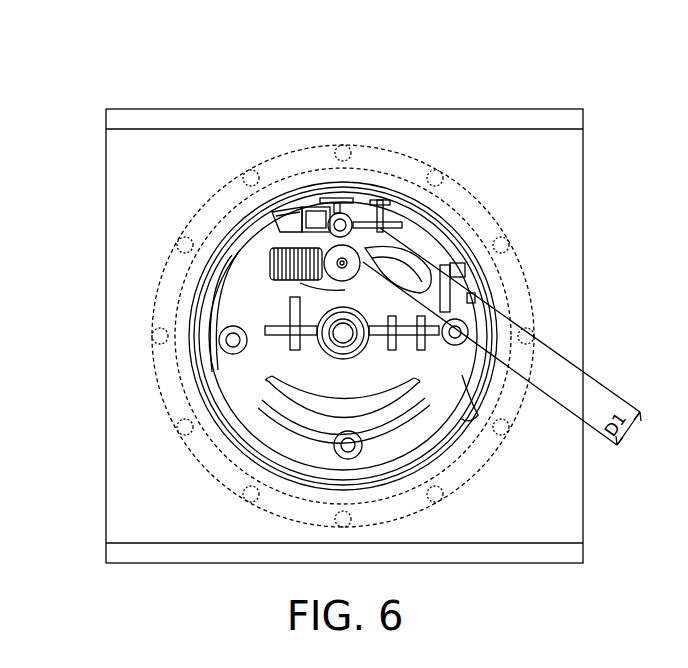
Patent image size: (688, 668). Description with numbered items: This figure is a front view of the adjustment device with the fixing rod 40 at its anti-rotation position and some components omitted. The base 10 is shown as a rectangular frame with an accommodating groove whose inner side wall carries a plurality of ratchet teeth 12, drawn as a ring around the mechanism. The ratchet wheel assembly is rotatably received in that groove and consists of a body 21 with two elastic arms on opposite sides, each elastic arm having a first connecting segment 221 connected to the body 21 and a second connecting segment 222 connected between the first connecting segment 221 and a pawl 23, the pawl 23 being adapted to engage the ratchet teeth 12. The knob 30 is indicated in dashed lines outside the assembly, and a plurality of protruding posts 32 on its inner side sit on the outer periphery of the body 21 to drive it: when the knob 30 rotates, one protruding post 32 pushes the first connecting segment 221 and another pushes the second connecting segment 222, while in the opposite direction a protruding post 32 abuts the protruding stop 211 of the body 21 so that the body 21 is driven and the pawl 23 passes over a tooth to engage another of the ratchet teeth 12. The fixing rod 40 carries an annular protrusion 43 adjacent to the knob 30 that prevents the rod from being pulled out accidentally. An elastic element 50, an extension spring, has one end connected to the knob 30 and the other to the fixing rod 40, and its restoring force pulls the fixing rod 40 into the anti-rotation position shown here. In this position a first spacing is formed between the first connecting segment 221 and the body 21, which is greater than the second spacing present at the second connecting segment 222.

The base 10 is at (527, 110).
The ratchet teeth 12 is at (282, 212).
The body 21 is at (327, 371).
The protruding stop 211 is at (462, 375).
The first connecting segment 221 is at (418, 212).
The second connecting segment 222 is at (313, 210).
The pawl 23 is at (288, 218).
The knob 30 is at (524, 275).
The protruding posts 32 is at (349, 213).
The fixing rod 40 is at (340, 247).
The annular protrusion 43 is at (330, 285).
The elastic element 50 is at (268, 262).